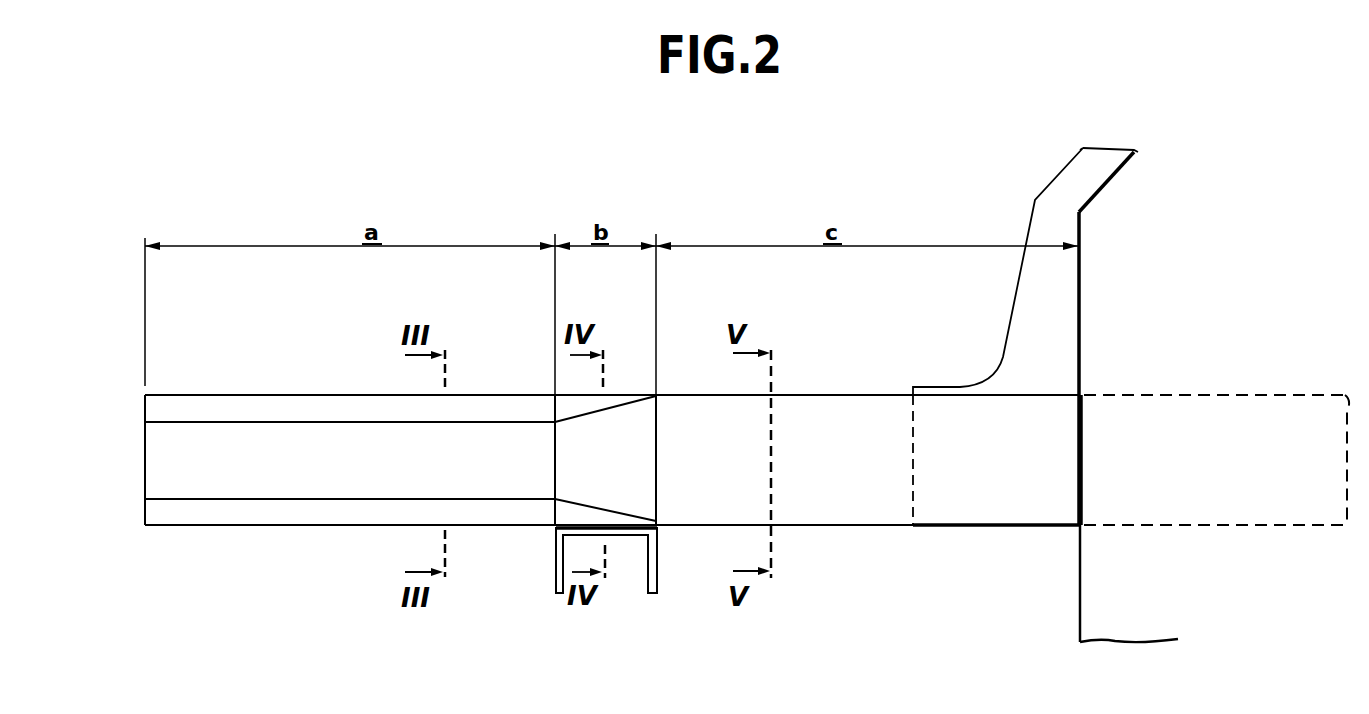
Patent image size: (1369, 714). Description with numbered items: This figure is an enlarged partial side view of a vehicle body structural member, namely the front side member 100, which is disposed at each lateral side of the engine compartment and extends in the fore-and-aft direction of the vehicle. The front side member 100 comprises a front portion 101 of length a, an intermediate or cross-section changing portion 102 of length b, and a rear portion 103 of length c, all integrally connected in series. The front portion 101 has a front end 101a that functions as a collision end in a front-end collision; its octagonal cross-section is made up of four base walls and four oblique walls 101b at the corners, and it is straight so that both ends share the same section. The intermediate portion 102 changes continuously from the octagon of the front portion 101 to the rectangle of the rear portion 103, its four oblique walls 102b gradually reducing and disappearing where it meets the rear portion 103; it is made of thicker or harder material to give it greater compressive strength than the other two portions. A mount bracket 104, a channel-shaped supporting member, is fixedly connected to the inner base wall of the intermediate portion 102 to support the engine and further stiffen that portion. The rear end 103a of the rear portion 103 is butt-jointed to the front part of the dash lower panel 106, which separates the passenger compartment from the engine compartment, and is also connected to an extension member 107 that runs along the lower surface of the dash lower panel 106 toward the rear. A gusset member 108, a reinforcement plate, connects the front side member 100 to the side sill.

The front side member 100 is at (206, 532).
The front portion 101 is at (263, 395).
The front end 101a is at (145, 468).
The oblique walls 101b is at (322, 409).
The intermediate portion 102 is at (617, 392).
The oblique walls 102b is at (567, 412).
The rear portion 103 is at (710, 393).
The rear end 103a is at (1082, 472).
The mount bracket 104 is at (557, 578).
The dash lower panel 106 is at (1080, 577).
The extension member 107 is at (1210, 526).
The gusset member 108 is at (1032, 217).